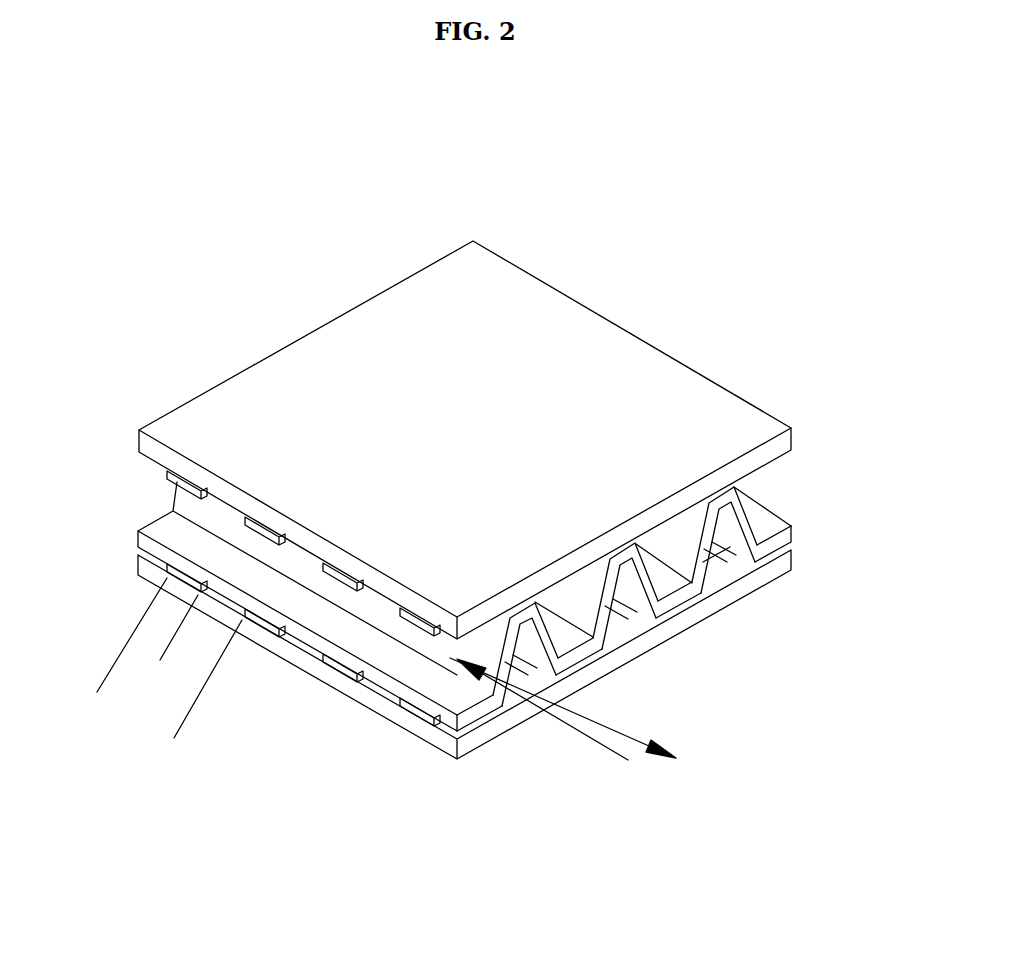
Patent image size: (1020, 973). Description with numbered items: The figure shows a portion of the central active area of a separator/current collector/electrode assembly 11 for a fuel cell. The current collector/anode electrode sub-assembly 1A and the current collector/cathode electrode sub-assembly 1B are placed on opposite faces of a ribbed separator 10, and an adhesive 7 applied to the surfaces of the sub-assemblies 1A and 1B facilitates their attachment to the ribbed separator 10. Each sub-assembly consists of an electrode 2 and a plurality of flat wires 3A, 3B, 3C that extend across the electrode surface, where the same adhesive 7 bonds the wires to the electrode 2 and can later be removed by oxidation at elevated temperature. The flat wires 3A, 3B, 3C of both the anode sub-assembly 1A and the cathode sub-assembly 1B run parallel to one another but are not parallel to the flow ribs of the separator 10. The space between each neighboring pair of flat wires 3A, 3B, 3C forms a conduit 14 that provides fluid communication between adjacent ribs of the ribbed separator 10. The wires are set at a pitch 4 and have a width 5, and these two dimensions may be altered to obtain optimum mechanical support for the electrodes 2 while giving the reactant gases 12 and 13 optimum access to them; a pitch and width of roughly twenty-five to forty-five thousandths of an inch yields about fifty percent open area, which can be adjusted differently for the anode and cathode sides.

The current collector/anode electrode sub-assembly 1A is at (792, 560).
The current collector/cathode electrode sub-assembly 1B is at (792, 438).
The electrode 2 is at (137, 560).
The flat wire 3A is at (423, 718).
The flat wire 3B is at (347, 672).
The flat wire 3C is at (270, 620).
The pitch 4 is at (225, 740).
The width 5 is at (107, 672).
The adhesive 7 is at (618, 602).
The ribbed separator 10 is at (788, 528).
The assembly 11 is at (678, 287).
The reactant gas 12 is at (565, 727).
The reactant gas 13 is at (597, 708).
The conduit 14 is at (377, 688).